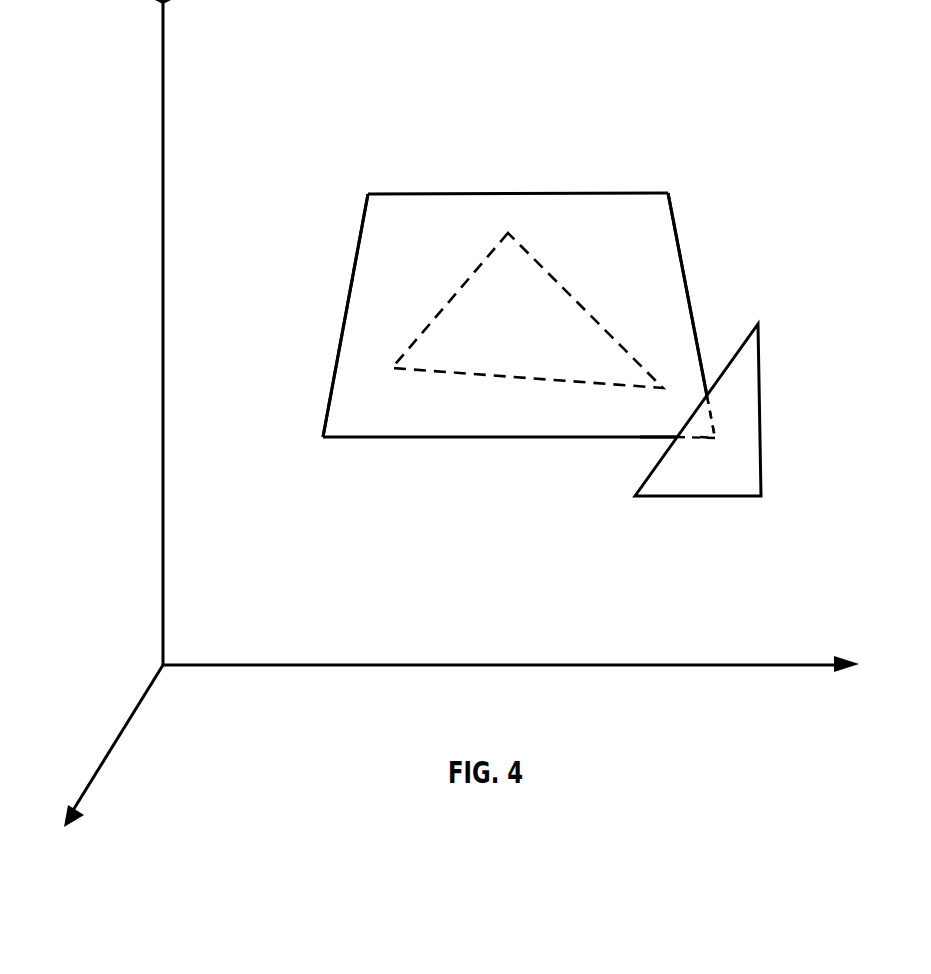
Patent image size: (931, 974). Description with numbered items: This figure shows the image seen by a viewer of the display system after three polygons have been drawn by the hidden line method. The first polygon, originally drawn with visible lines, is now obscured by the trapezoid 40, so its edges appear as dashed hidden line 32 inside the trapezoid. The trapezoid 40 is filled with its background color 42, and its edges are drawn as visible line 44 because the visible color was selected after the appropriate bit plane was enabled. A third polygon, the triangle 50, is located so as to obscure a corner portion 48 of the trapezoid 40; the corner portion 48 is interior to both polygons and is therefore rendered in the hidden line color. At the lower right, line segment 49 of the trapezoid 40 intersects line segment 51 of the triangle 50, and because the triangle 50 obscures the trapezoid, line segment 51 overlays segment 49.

The hidden line 32 is at (453, 293).
The trapezoid 40 is at (426, 193).
The background color 42 is at (604, 258).
The visible line 44 is at (334, 370).
The corner portion 48 is at (697, 425).
The line segment 49 is at (698, 440).
The triangle 50 is at (762, 375).
The line segment 51 is at (670, 438).